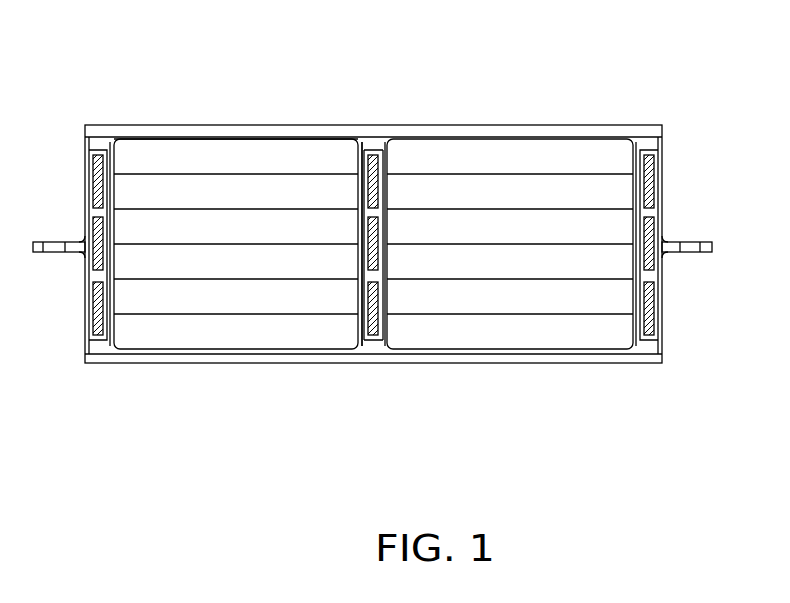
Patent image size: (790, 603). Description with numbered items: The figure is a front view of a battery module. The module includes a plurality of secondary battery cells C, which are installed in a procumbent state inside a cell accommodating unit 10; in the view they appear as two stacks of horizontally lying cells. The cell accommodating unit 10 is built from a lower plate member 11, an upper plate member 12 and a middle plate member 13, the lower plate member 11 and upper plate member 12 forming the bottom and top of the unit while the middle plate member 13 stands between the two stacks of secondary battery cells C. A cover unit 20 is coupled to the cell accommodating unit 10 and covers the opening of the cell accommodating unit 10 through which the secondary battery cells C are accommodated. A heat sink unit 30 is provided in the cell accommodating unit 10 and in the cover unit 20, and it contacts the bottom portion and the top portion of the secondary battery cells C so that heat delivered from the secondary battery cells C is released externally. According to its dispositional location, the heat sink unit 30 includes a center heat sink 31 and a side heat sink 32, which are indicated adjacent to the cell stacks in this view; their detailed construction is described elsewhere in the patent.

The cell accommodating unit 10 is at (388, 442).
The lower plate member 11 is at (508, 358).
The upper plate member 12 is at (508, 130).
The middle plate member 13 is at (383, 278).
The cover unit 20 is at (80, 310).
The heat sink unit 30 is at (243, 65).
The center heat sink 31 is at (357, 164).
The side heat sink 32 is at (125, 160).
The secondary battery cells C is at (247, 338).